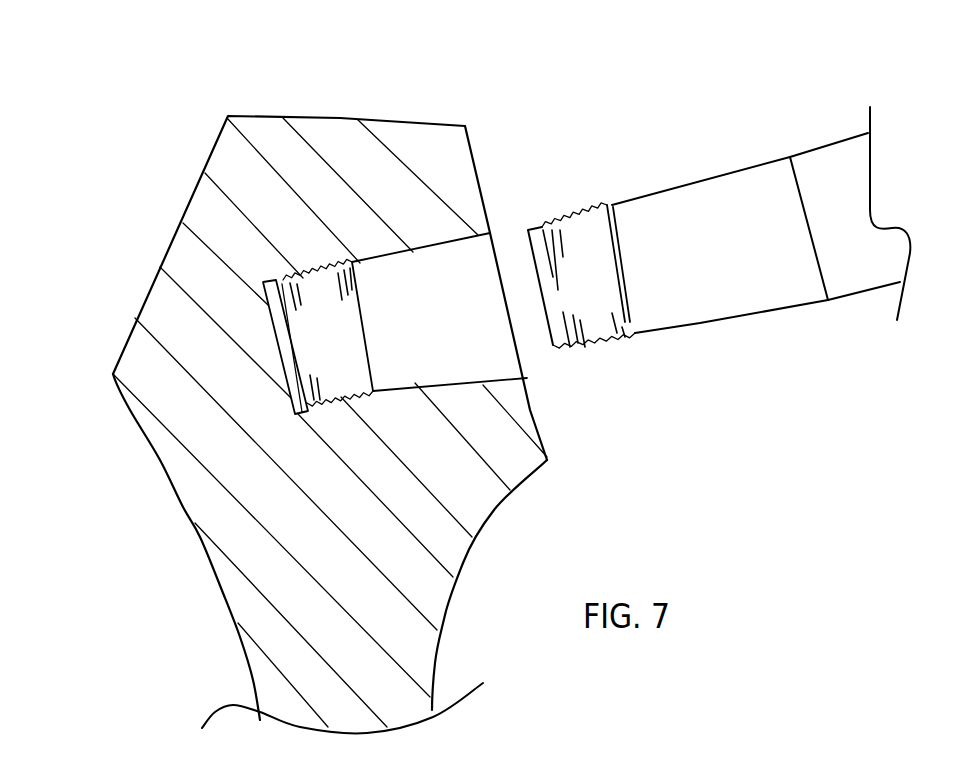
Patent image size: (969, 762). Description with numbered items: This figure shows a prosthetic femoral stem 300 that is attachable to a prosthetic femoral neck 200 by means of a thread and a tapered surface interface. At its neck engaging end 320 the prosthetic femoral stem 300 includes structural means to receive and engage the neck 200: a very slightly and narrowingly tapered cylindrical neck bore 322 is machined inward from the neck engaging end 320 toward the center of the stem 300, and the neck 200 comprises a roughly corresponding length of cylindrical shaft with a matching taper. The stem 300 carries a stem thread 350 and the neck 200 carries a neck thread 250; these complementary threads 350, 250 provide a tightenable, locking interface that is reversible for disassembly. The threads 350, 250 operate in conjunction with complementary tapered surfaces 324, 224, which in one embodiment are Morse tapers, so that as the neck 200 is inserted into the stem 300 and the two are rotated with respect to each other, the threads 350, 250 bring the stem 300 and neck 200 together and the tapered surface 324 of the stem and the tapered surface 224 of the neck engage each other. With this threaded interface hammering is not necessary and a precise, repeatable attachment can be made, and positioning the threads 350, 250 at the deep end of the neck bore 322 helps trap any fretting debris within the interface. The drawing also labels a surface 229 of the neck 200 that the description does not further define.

The prosthetic femoral stem 300 is at (205, 212).
The neck engaging end 320 is at (503, 128).
The neck bore 322 is at (470, 258).
The tapered surface 324 is at (474, 375).
The stem thread 350 is at (355, 383).
The prosthetic femoral neck 200 is at (840, 155).
The tapered surface 224 is at (713, 172).
The shaft lower surface 229 is at (738, 303).
The neck thread 250 is at (588, 203).